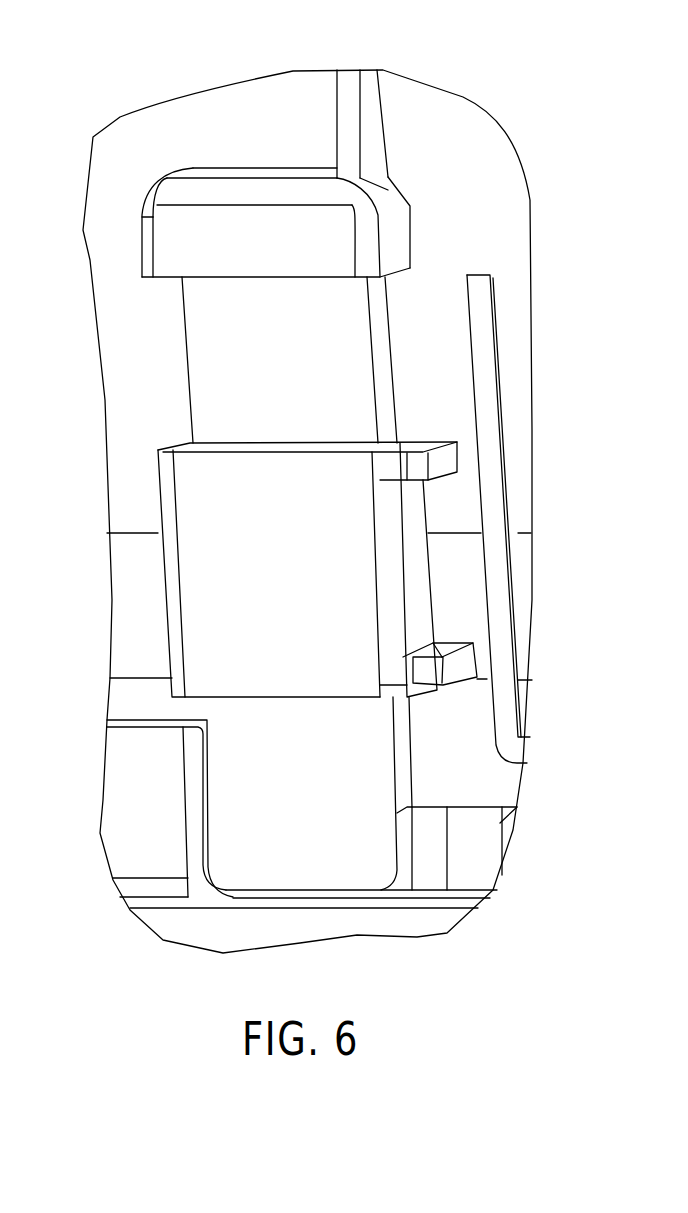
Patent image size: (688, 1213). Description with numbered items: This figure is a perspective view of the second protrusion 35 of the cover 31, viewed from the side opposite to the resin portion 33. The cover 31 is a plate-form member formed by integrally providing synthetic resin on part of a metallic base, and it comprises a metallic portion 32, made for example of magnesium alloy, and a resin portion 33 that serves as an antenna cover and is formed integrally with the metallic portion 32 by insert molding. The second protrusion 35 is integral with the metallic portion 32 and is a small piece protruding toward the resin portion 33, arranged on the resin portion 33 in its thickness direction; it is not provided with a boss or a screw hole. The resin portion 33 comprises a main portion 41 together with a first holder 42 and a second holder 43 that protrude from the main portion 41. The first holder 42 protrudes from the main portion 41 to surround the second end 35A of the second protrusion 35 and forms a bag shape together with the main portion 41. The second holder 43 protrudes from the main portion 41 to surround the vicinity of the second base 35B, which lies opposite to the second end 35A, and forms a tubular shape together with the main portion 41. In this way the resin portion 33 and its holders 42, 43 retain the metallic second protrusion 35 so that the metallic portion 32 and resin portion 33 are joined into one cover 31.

The cover 31 is at (442, 107).
The metallic portion 32 is at (510, 782).
The resin portion 33 is at (300, 78).
The second protrusion 35 is at (428, 323).
The second end 35A is at (193, 300).
The second base 35B is at (190, 641).
The main portion 41 is at (465, 402).
The first holder 42 is at (400, 217).
The second holder 43 is at (365, 590).